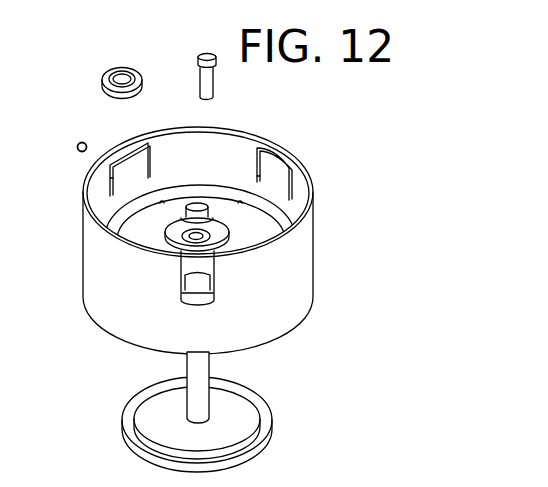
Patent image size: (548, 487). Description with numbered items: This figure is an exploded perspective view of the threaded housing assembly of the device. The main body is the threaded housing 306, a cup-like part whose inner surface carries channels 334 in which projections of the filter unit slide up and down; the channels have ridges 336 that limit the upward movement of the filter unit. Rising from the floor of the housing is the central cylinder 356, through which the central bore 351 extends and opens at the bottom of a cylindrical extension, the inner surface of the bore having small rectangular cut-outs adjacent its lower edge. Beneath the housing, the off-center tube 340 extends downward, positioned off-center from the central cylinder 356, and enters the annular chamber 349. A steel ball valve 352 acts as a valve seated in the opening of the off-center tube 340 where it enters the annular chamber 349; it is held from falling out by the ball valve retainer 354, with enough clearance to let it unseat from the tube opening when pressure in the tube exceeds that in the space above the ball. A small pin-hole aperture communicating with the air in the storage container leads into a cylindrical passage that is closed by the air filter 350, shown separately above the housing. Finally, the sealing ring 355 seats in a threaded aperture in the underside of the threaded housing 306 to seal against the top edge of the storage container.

The threaded housing 306 is at (315, 222).
The channels 334 is at (128, 175).
The ridges 336 is at (128, 157).
The off-center tube 340 is at (210, 365).
The annular chamber 349 is at (226, 238).
The air filter 350 is at (213, 82).
The central bore 351 is at (214, 235).
The steel ball valve 352 is at (78, 146).
The ball valve retainer 354 is at (105, 73).
The sealing ring 355 is at (253, 450).
The central cylinder 356 is at (178, 246).